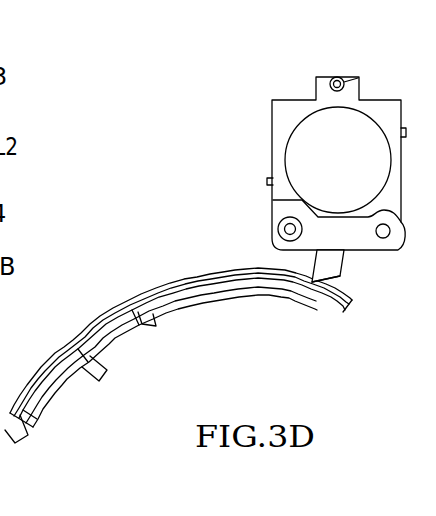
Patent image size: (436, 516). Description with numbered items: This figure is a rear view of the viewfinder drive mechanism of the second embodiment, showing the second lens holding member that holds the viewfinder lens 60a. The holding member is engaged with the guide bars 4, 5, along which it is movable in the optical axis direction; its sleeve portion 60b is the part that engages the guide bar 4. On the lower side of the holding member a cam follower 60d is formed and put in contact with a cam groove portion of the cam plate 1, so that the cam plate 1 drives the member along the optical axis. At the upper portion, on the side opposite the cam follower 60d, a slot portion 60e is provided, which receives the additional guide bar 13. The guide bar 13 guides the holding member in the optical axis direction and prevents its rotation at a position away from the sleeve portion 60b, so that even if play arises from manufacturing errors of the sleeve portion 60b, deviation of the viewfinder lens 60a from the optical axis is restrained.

The cam plate 1 is at (110, 310).
The guide bar 4 is at (279, 229).
The guide bar 5 is at (388, 238).
The guide bar 13 is at (336, 77).
The viewfinder lens 60a is at (303, 144).
The sleeve portion 60b is at (396, 250).
The cam follower 60d is at (332, 273).
The slot portion 60e is at (358, 78).